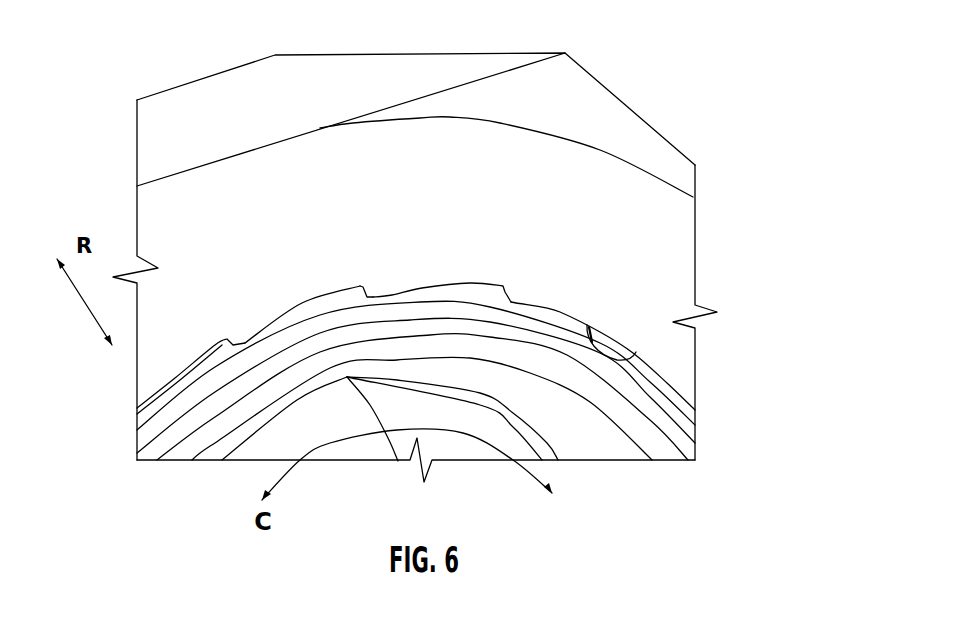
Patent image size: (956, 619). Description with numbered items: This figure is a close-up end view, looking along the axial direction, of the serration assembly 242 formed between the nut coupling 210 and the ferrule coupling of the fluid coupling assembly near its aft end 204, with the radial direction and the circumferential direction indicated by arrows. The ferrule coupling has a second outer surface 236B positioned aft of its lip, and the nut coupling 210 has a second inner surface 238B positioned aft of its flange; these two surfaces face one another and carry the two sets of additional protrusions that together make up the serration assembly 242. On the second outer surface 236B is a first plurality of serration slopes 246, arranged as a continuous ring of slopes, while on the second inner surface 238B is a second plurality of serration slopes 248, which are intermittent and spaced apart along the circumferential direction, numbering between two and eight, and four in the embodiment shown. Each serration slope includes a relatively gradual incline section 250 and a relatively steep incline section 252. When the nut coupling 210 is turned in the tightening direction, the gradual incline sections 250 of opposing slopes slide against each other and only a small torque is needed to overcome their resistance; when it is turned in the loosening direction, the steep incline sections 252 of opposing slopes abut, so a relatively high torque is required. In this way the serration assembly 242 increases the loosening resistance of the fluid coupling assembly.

The aft end 204 is at (590, 432).
The nut coupling 210 is at (598, 167).
The second outer surface 236B is at (679, 395).
The second inner surface 238B is at (633, 358).
The serration assembly 242 is at (605, 330).
The first plurality of serration slopes 246 is at (343, 302).
The second plurality of serration slopes 248 is at (393, 296).
The relatively gradual incline section 250 is at (300, 300).
The relatively steep incline section 252 is at (368, 292).